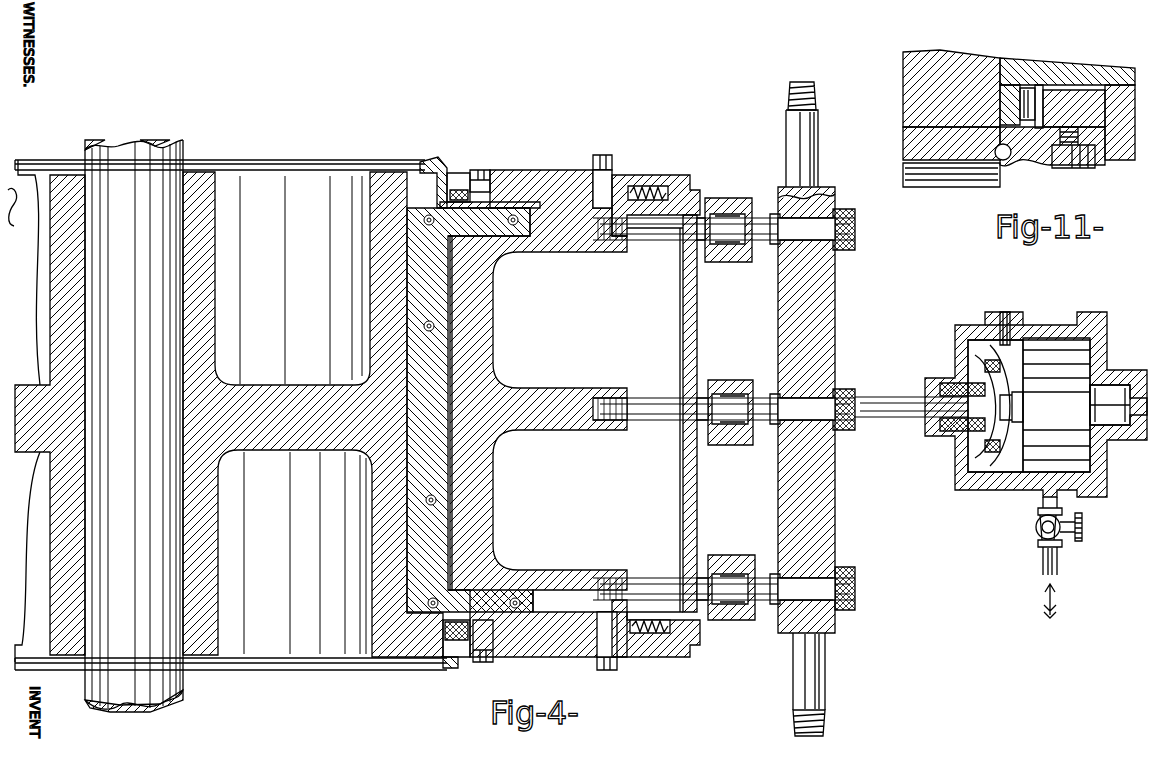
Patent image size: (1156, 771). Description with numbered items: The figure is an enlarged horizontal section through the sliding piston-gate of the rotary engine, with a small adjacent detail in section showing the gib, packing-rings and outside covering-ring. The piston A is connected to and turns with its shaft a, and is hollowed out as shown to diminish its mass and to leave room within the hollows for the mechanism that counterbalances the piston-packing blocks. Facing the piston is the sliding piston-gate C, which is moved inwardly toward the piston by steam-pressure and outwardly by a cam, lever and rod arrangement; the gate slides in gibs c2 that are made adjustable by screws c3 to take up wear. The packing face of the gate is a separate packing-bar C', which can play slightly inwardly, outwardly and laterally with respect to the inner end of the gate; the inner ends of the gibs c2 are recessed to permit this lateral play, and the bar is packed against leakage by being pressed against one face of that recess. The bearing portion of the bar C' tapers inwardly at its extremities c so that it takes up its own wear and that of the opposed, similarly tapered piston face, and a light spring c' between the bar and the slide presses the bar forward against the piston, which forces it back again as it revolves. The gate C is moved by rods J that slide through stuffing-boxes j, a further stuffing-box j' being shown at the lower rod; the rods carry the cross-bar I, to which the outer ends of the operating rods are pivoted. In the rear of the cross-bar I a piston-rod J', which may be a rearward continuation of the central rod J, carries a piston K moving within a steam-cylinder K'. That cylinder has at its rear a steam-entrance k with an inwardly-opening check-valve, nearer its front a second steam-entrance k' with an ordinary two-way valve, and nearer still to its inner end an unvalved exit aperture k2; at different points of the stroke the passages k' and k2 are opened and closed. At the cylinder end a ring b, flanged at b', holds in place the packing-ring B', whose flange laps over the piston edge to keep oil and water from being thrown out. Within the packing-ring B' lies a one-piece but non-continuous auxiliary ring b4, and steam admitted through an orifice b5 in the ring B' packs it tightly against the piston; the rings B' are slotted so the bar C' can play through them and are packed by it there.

In FIG. 4, the piston shaft a is at (134, 426).
In FIG. 4, the piston A is at (282, 448).
In FIG. 4, the ring b is at (231, 432).
In FIG. 11, the ring b is at (1050, 163).
In FIG. 11, the flange b' is at (951, 192).
In FIG. 11, the auxiliary ring b4 is at (903, 130).
In FIG. 11, the orifice b5 is at (1027, 88).
In FIG. 4, the packing ring B' is at (462, 409).
In FIG. 11, the packing ring B' is at (1049, 81).
In FIG. 4, the tapering extremities c is at (469, 415).
In FIG. 4, the spring c' is at (484, 413).
In FIG. 4, the gib c2 is at (628, 176).
In FIG. 11, the gib c2 is at (1082, 100).
In FIG. 4, the screw c3 is at (478, 170).
In FIG. 11, the screw c3 is at (1085, 169).
In FIG. 4, the sliding piston-gate C is at (538, 413).
In FIG. 4, the packing bar C' is at (470, 410).
In FIG. 4, the cross bar I is at (818, 150).
In FIG. 4, the rod J is at (662, 413).
In FIG. 4, the stuffing box j is at (725, 333).
In FIG. 4, the flange j' is at (726, 577).
In FIG. 4, the piston rod J' is at (938, 395).
In FIG. 4, the piston K is at (1036, 404).
In FIG. 4, the steam cylinder K' is at (1045, 405).
In FIG. 4, the steam entrance k is at (1118, 385).
In FIG. 4, the second steam entrance k' is at (1039, 557).
In FIG. 4, the exit aperture k2 is at (1005, 312).